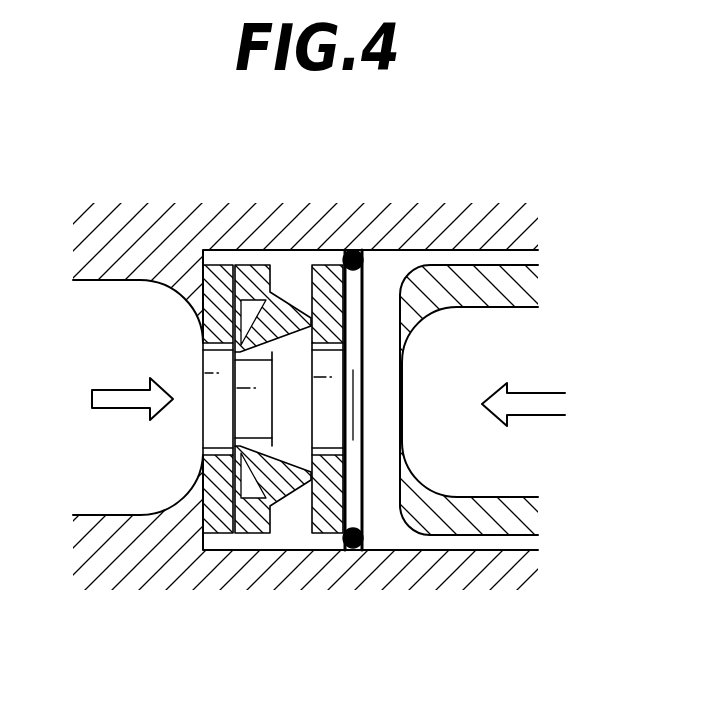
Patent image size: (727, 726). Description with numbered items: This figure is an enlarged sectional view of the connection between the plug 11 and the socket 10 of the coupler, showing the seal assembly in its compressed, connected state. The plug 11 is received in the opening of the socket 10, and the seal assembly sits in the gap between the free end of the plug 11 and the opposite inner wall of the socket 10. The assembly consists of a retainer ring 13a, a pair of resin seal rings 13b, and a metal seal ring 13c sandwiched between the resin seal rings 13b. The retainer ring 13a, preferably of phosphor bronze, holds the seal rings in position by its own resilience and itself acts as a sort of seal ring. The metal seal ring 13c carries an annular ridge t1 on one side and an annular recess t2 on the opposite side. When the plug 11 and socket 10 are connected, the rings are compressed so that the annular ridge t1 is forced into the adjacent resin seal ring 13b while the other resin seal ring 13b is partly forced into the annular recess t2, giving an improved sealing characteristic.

The socket 10 is at (395, 222).
The plug 11 is at (508, 290).
The retainer ring 13a is at (365, 522).
The resin seal rings 13b is at (205, 505).
The metal seal ring 13c is at (250, 505).
The annular ridge t1 is at (284, 322).
The annular recess t2 is at (250, 310).